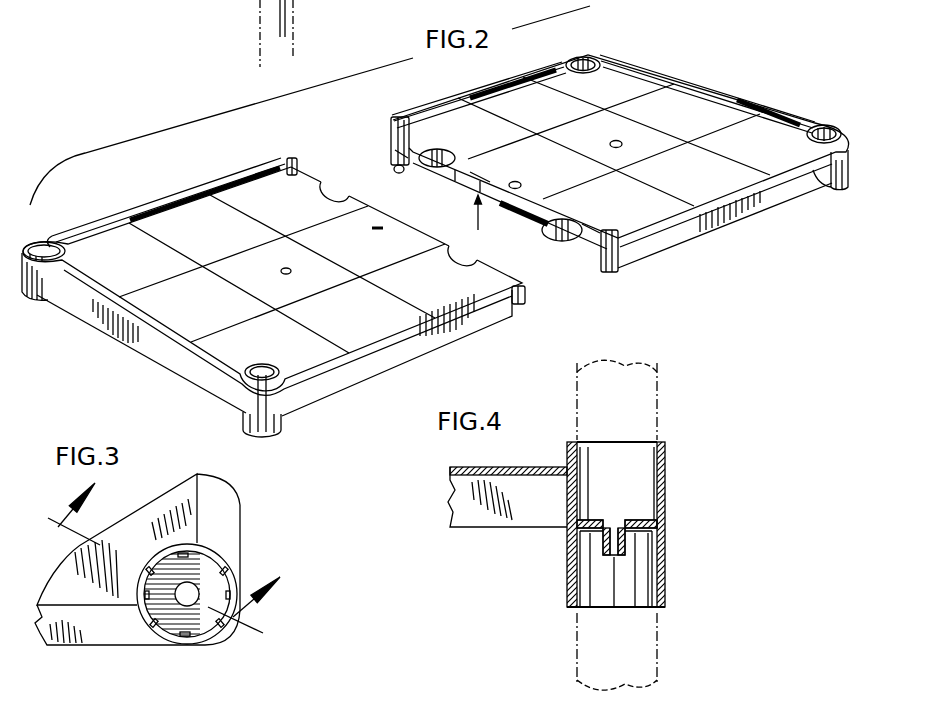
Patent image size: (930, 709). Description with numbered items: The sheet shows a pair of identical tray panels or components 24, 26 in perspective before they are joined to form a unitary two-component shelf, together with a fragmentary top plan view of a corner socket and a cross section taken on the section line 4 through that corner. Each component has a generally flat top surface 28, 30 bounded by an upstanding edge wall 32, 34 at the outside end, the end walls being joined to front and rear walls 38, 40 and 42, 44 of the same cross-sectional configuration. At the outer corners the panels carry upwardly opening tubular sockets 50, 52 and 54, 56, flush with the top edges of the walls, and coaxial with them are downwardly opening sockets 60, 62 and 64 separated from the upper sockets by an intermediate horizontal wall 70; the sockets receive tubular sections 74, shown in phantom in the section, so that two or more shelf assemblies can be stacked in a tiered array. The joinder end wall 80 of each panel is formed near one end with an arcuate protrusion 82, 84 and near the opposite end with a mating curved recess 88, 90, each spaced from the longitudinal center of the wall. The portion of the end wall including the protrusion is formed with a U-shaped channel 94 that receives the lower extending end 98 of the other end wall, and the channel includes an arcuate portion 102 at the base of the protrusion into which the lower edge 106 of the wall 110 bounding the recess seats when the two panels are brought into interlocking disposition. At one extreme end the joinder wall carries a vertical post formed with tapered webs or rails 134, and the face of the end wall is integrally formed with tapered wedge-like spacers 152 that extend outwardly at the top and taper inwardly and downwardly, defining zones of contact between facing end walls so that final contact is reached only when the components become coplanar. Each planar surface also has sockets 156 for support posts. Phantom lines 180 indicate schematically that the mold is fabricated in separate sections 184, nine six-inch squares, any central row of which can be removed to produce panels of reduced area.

In FIG. 3, the section line 4— 4 is at (158, 560).
In FIG. 2, the panel or component 24 is at (143, 196).
In FIG. 2, the panel or component 26 is at (505, 75).
In FIG. 2, the top surface 28 is at (340, 318).
In FIG. 2, the top surface 30 is at (712, 200).
In FIG. 3, the top surface 30 is at (174, 500).
In FIG. 4, the top surface 30 is at (533, 466).
In FIG. 2, the edge wall 32 is at (105, 333).
In FIG. 2, the edge wall 34 is at (731, 90).
In FIG. 3, the edge wall 34 is at (232, 507).
In FIG. 2, the front wall 38 is at (397, 330).
In FIG. 2, the rear wall 40 is at (103, 220).
In FIG. 2, the front wall 42 is at (754, 183).
In FIG. 3, the front wall 42 is at (138, 628).
In FIG. 2, the rear wall 44 is at (443, 102).
In FIG. 2, the tubular socket 50 is at (266, 366).
In FIG. 2, the tubular socket 52 is at (43, 240).
In FIG. 2, the tubular socket 54 is at (826, 128).
In FIG. 3, the tubular socket 54 is at (213, 583).
In FIG. 4, the tubular socket 54 is at (643, 464).
In FIG. 2, the tubular socket 56 is at (600, 58).
In FIG. 2, the downwardly opening socket 60 is at (280, 425).
In FIG. 2, the downwardly opening socket 62 is at (50, 302).
In FIG. 2, the downwardly opening socket 64 is at (832, 190).
In FIG. 4, the downwardly opening socket 64 is at (643, 583).
In FIG. 4, the intermediate horizontal wall 70 is at (660, 543).
In FIG. 4, the tubular section 74 is at (648, 392).
In FIG. 2, the end wall 80 is at (473, 224).
In FIG. 2, the protrusion 82 is at (576, 228).
In FIG. 2, the protrusion 84 is at (335, 196).
In FIG. 2, the recess 88 is at (442, 170).
In FIG. 2, the recess 90 is at (468, 262).
In FIG. 2, the channel 94 is at (517, 183).
In FIG. 2, the lower extending end 98 is at (452, 172).
In FIG. 2, the arcuate portion 102 is at (565, 222).
In FIG. 2, the lower edge 106 is at (430, 167).
In FIG. 2, the wall 110 is at (430, 147).
In FIG. 2, the webs or rails 134 is at (291, 158).
In FIG. 2, the spacer 152 is at (393, 147).
In FIG. 2, the socket 156 is at (282, 273).
In FIG. 2, the phantom lines 180 is at (176, 244).
In FIG. 2, the mold section 184 is at (181, 312).